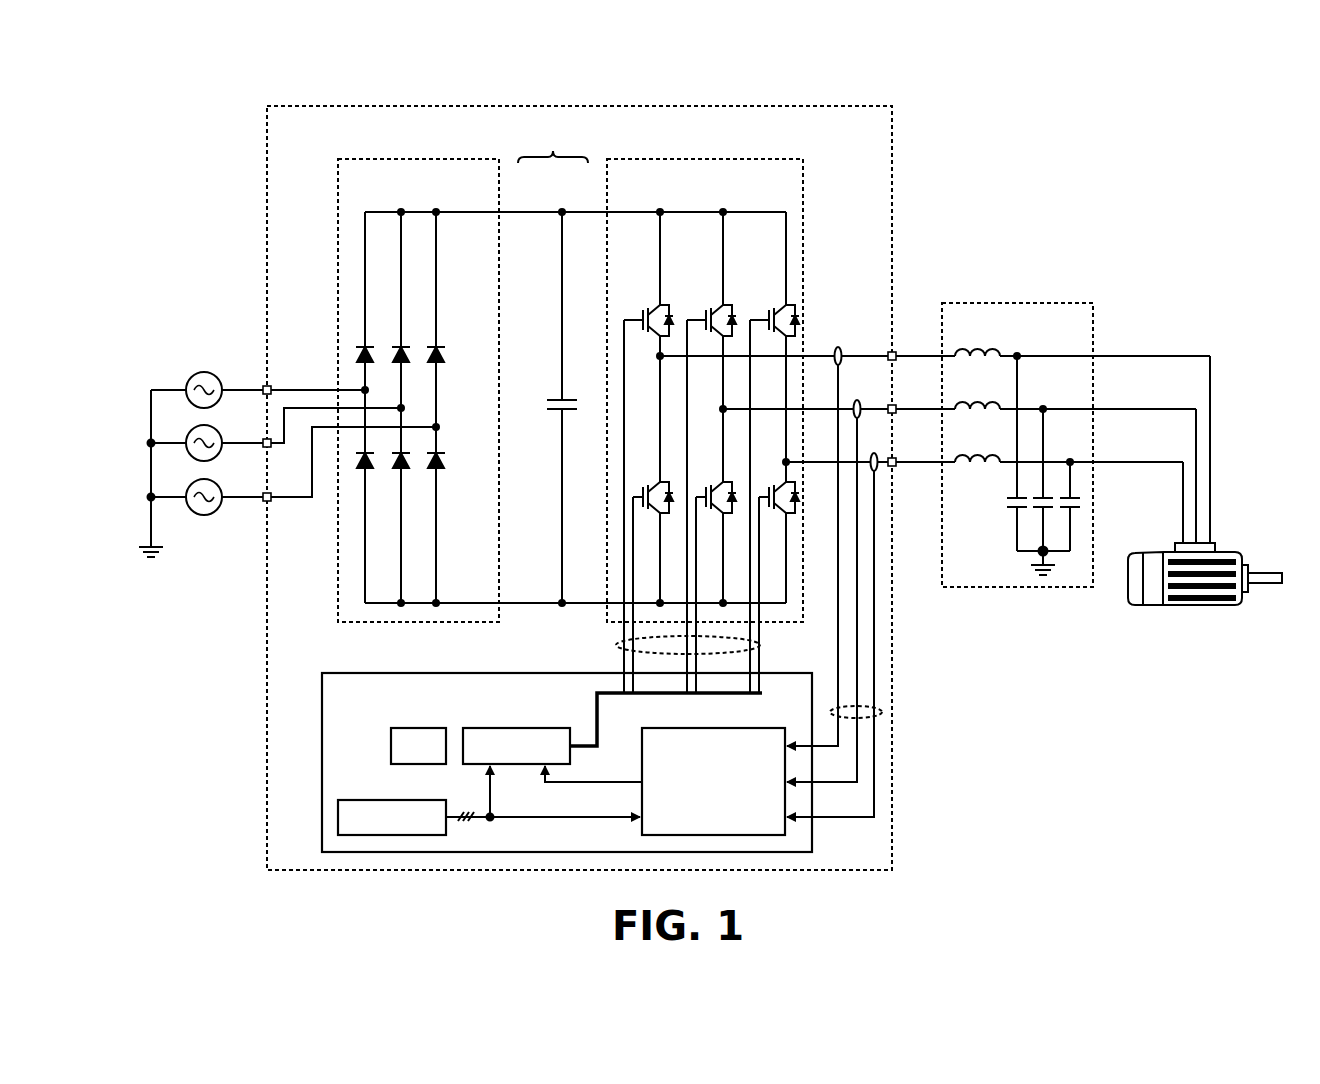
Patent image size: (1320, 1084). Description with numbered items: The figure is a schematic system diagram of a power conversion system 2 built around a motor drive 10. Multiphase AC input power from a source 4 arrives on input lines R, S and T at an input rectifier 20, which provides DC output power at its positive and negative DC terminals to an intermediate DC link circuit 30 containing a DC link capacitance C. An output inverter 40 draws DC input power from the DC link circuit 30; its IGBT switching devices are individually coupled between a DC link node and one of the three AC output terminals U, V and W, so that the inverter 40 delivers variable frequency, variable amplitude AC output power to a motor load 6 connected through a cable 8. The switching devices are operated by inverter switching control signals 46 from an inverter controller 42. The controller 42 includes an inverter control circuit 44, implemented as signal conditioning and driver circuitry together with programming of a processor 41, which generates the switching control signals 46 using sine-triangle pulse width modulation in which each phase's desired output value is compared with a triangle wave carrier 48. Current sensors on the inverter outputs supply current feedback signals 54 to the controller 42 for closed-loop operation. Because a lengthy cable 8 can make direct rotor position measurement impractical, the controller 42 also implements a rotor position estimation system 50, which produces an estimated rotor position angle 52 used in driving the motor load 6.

The power conversion system 2 is at (215, 152).
The source 4 is at (175, 358).
The motor load 6 is at (1232, 552).
The cable 8 is at (1015, 302).
The motor drive 10 is at (579, 105).
The input rectifier 20 is at (409, 158).
The intermediate DC link circuit 30 is at (553, 152).
The output inverter 40 is at (707, 158).
The processor 41 is at (391, 746).
The inverter controller 42 is at (420, 672).
The inverter control circuit 44 is at (535, 728).
The inverter switching control signals 46 is at (760, 646).
The triangle wave carrier 48 is at (393, 800).
The rotor position estimation system 50 is at (713, 728).
The estimated rotor position angle θ 52 is at (585, 782).
The inverter output current feedback signals 54 is at (882, 712).